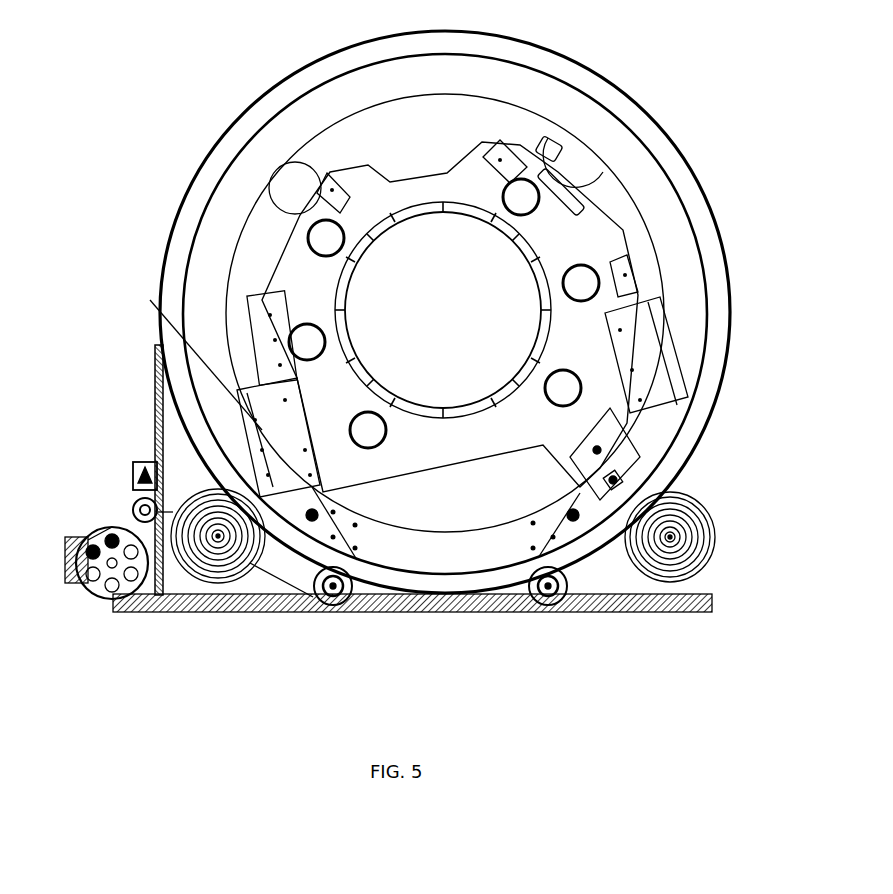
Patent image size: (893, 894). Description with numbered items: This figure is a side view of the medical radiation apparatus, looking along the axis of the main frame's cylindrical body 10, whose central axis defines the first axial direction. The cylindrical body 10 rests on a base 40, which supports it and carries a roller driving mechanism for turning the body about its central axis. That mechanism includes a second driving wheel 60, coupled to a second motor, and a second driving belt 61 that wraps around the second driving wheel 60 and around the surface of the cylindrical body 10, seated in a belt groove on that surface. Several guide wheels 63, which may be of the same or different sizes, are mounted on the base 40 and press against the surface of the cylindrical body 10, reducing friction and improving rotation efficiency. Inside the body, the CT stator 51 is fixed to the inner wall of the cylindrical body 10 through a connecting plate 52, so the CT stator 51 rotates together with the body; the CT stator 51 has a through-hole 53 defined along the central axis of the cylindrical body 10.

The cylindrical body 10 is at (290, 145).
The base 40 is at (663, 597).
The CT stator 51 is at (573, 238).
The connecting plate 52 is at (283, 440).
The through-hole 53 is at (456, 324).
The second driving wheel 60 is at (92, 542).
The second driving belt 61 is at (158, 443).
The guide wheels 63 is at (648, 556).